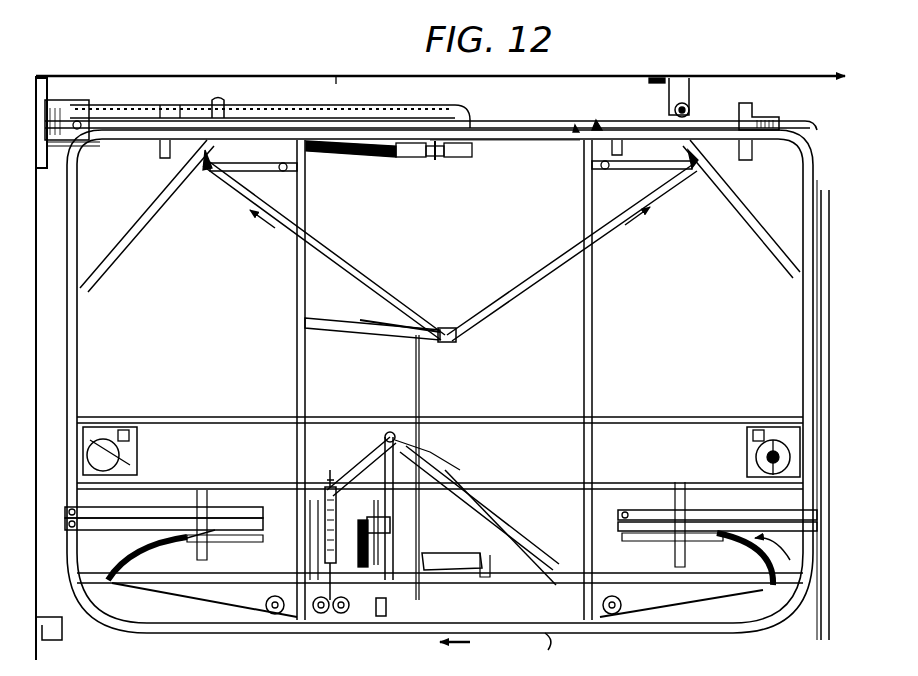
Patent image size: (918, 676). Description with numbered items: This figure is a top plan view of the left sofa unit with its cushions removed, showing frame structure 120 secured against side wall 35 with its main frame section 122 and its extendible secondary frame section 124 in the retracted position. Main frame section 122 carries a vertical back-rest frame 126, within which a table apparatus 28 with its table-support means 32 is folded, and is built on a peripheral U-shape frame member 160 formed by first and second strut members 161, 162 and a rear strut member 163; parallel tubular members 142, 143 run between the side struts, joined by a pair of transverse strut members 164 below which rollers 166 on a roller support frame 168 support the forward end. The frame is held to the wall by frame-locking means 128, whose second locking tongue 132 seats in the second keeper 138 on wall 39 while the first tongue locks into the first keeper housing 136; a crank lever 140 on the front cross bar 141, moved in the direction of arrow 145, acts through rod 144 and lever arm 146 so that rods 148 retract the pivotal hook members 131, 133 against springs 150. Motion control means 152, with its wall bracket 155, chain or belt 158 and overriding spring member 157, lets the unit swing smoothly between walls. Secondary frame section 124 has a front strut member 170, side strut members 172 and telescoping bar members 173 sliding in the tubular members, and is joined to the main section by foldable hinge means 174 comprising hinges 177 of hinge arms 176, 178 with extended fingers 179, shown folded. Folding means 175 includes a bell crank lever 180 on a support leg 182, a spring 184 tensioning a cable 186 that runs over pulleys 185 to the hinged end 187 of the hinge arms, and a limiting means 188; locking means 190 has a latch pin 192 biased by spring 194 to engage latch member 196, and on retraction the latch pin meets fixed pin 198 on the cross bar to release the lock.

The table apparatus 28 is at (778, 125).
The table-support means 32 is at (800, 282).
The side wall 35 is at (340, 76).
The wall 39 is at (45, 282).
The frame structure 120 is at (598, 120).
The main frame section 122 is at (800, 135).
The secondary frame section 124 is at (738, 634).
The vertical back-rest frame 126 is at (507, 122).
The frame-locking means 128 is at (690, 105).
The pivotal hook member 131 is at (700, 175).
The second locking tongue 132 is at (218, 98).
The pivotal hook member 133 is at (205, 175).
The first keeper housing 136 is at (668, 94).
The second keeper 138 is at (62, 638).
The crank lever 140 is at (500, 520).
The front cross bar 141 is at (512, 560).
The tubular member 142 is at (593, 325).
The tubular member 143 is at (296, 352).
The rod 144 is at (420, 362).
The arrow 145 is at (460, 642).
The lever arm 146 is at (385, 335).
The rods 148 is at (520, 312).
The springs 150 is at (298, 183).
The motion control means 152 is at (125, 104).
The wall bracket 155 is at (62, 115).
The overriding spring member 157 is at (380, 160).
The chain or belt 158 is at (288, 104).
The peripheral U-shape frame member 160 is at (578, 128).
The first strut member 161 is at (805, 320).
The second strut member 162 is at (78, 343).
The rear strut member 163 is at (552, 148).
The transverse strut members 164 is at (192, 418).
The rollers 166 is at (125, 457).
The roller support frame 168 is at (140, 437).
The front strut member 170 is at (328, 600).
The side strut members 172 is at (67, 555).
The telescoping bar members 173 is at (297, 620).
The foldable hinge means 174 is at (182, 545).
The folding means 175 is at (425, 455).
The hinge arm 176 is at (200, 508).
The hinges 177 is at (275, 520).
The hinge arm 178 is at (230, 530).
The extended fingers 179 is at (215, 505).
The bell crank lever 180 is at (552, 633).
The support leg 182 is at (385, 432).
The spring 184 is at (300, 520).
The pulleys 185 is at (278, 615).
The cable 186 is at (235, 610).
The hinged end 187 is at (622, 535).
The limiting means 188 is at (400, 450).
The locking means 190 is at (392, 540).
The latch pin 192 is at (380, 517).
The spring 194 is at (355, 600).
The latch member 196 is at (460, 462).
The fixed pin 198 is at (385, 615).